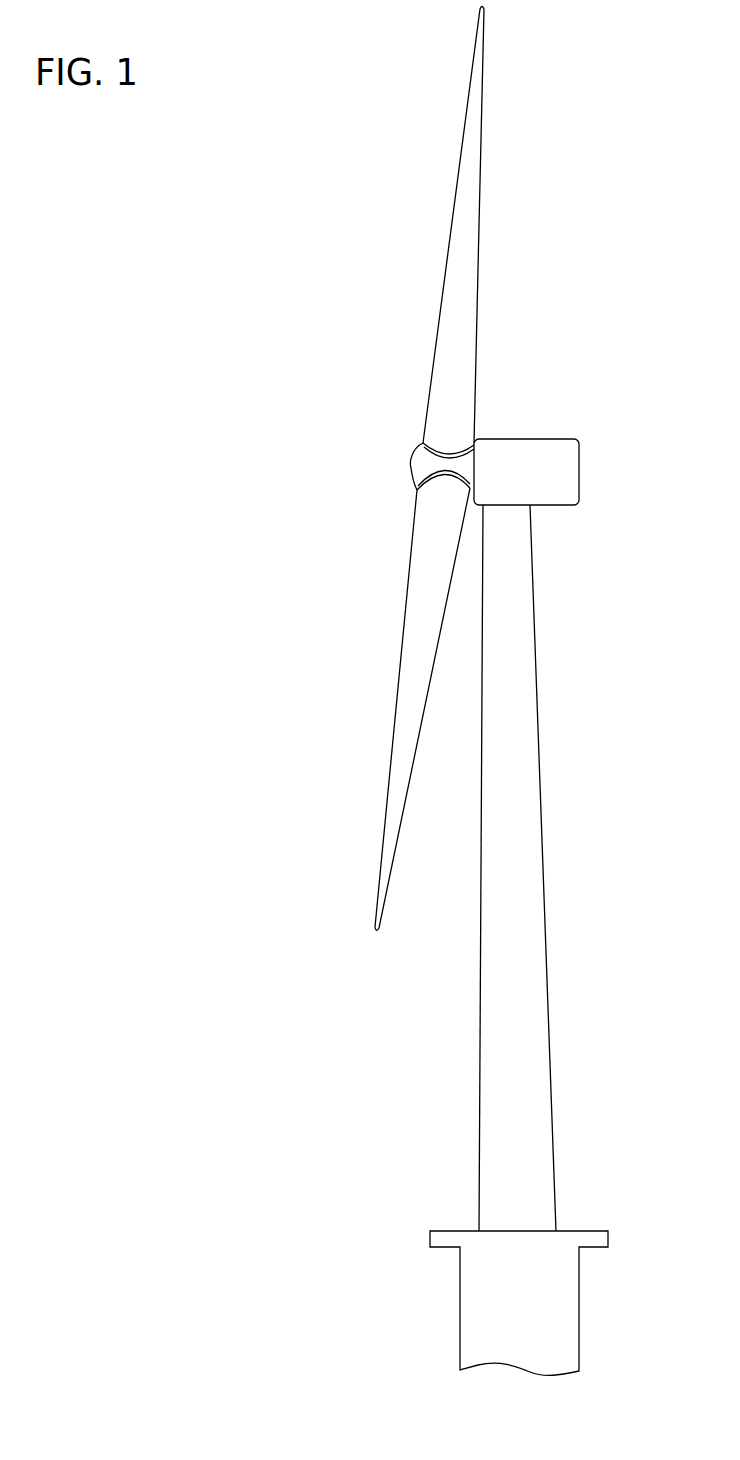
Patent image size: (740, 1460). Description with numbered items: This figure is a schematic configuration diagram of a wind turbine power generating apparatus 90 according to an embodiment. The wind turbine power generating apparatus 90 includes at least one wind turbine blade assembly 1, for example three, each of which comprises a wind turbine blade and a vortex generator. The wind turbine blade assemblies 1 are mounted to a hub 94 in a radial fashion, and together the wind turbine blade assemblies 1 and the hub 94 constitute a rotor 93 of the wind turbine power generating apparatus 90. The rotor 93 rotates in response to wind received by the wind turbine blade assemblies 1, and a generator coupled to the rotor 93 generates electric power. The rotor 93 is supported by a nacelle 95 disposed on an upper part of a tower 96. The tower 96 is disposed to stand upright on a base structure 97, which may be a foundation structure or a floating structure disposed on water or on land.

The wind turbine blade assembly 1 is at (459, 163).
The wind turbine power generating apparatus 90 is at (614, 128).
The rotor 93 is at (355, 430).
The hub 94 is at (411, 468).
The nacelle 95 is at (579, 470).
The tower 96 is at (542, 866).
The base structure 97 is at (579, 1312).